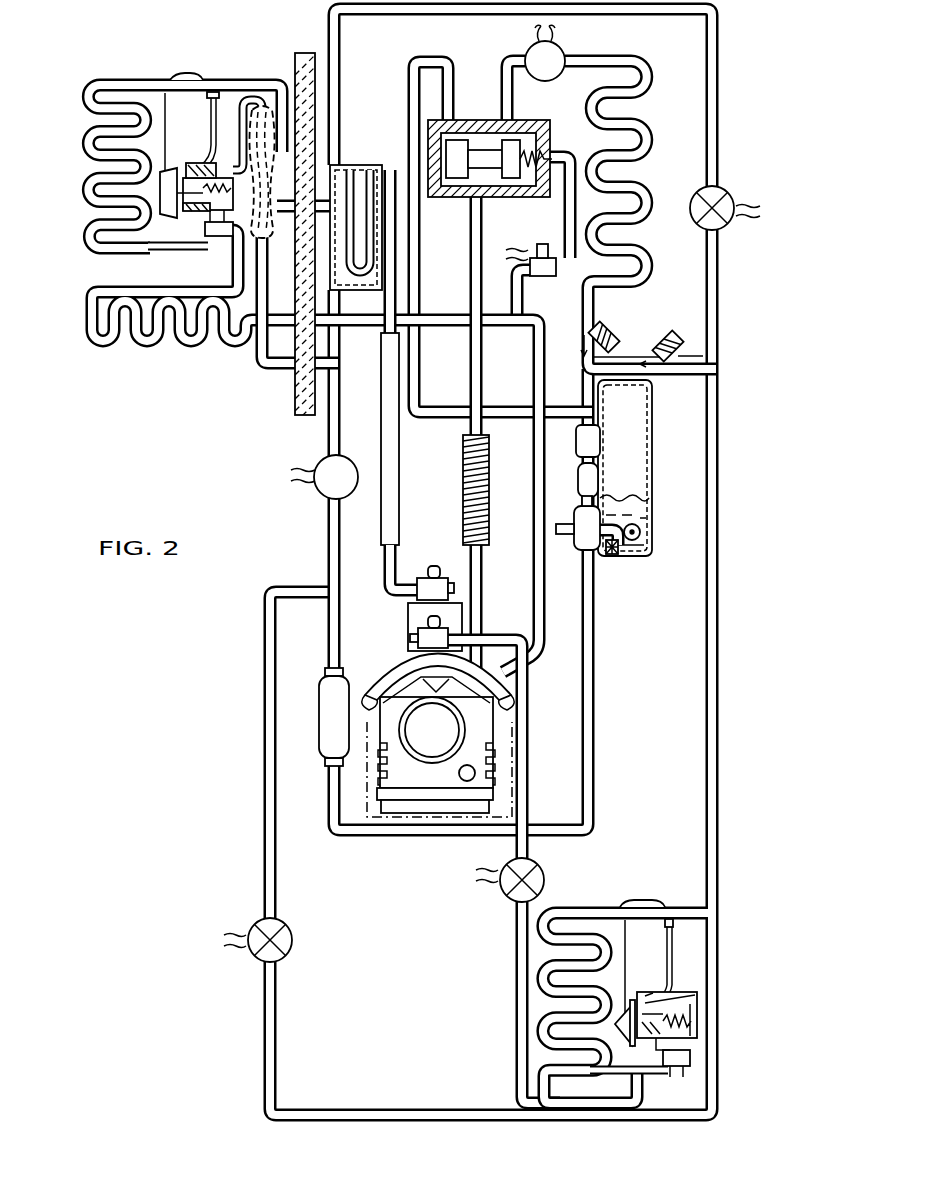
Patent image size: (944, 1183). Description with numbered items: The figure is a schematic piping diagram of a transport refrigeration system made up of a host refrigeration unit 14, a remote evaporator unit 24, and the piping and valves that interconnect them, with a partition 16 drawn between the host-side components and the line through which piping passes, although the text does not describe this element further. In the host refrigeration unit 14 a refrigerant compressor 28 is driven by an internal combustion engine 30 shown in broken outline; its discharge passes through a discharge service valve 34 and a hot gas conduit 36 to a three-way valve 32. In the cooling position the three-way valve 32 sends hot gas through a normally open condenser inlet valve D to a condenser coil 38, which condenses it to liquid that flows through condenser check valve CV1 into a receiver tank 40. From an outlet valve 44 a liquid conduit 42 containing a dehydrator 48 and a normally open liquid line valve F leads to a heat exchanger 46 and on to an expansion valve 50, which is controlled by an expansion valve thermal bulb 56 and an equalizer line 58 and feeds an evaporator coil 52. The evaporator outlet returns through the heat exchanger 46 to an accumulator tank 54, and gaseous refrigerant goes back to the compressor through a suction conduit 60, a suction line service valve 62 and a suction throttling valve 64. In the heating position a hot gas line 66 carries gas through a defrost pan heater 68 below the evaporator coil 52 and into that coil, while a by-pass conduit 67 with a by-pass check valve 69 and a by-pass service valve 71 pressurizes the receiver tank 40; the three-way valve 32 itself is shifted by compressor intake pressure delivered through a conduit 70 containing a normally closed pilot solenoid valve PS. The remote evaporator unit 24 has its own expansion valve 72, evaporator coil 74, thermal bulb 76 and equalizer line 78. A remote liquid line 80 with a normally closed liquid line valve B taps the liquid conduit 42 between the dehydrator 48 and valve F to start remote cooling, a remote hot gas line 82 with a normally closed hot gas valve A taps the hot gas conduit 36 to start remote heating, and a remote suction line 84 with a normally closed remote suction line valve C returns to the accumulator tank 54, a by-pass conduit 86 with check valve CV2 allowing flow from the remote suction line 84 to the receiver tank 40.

The host refrigeration unit 14 is at (267, 28).
The wall / partition 16 is at (296, 388).
The remote evaporator unit 24 is at (729, 971).
The refrigerant compressor 28 is at (505, 731).
The internal combustion engine 30 is at (370, 760).
The three-way valve 32 is at (529, 120).
The discharge service valve 34 is at (418, 633).
The hot gas conduit 36 is at (468, 297).
The condenser coil 38 is at (656, 133).
The receiver tank 40 is at (621, 560).
The liquid conduit 42 is at (593, 762).
The outlet valve 44 is at (577, 540).
The heat exchanger 46 is at (266, 240).
The dehydrator 48 is at (319, 680).
The expansion valve 50 is at (196, 204).
The evaporator coil 52 is at (84, 168).
The accumulator tank 54 is at (346, 166).
The expansion valve thermal bulb 56 is at (183, 72).
The equalizer line 58 is at (208, 145).
The suction conduit 60 is at (382, 546).
The suction line service valve 62 is at (434, 568).
The suction throttling valve 64 is at (408, 612).
The hot gas line 66 is at (408, 68).
The by-pass conduit 67 is at (438, 418).
The defrost pan heater 68 is at (178, 344).
The by-pass check valve 69 is at (577, 440).
The conduit 70 is at (524, 298).
The by-pass service valve 71 is at (579, 476).
The expansion valve 72 is at (648, 1046).
The evaporator coil 74 is at (548, 905).
The thermal bulb 76 is at (640, 902).
The equalizer line 78 is at (662, 960).
The remote liquid line 80 is at (264, 835).
The remote hot gas line 82 is at (514, 952).
The remote suction line 84 is at (713, 560).
The by-pass conduit 86 is at (631, 344).
The hot gas valve A is at (508, 897).
The liquid line valve B is at (292, 924).
The remote suction line valve C is at (729, 192).
The condenser inlet valve D is at (545, 53).
The liquid line valve F is at (324, 477).
The pilot solenoid valve PS is at (540, 245).
The condenser check valve CV1 is at (606, 328).
The check valve CV2 is at (674, 338).